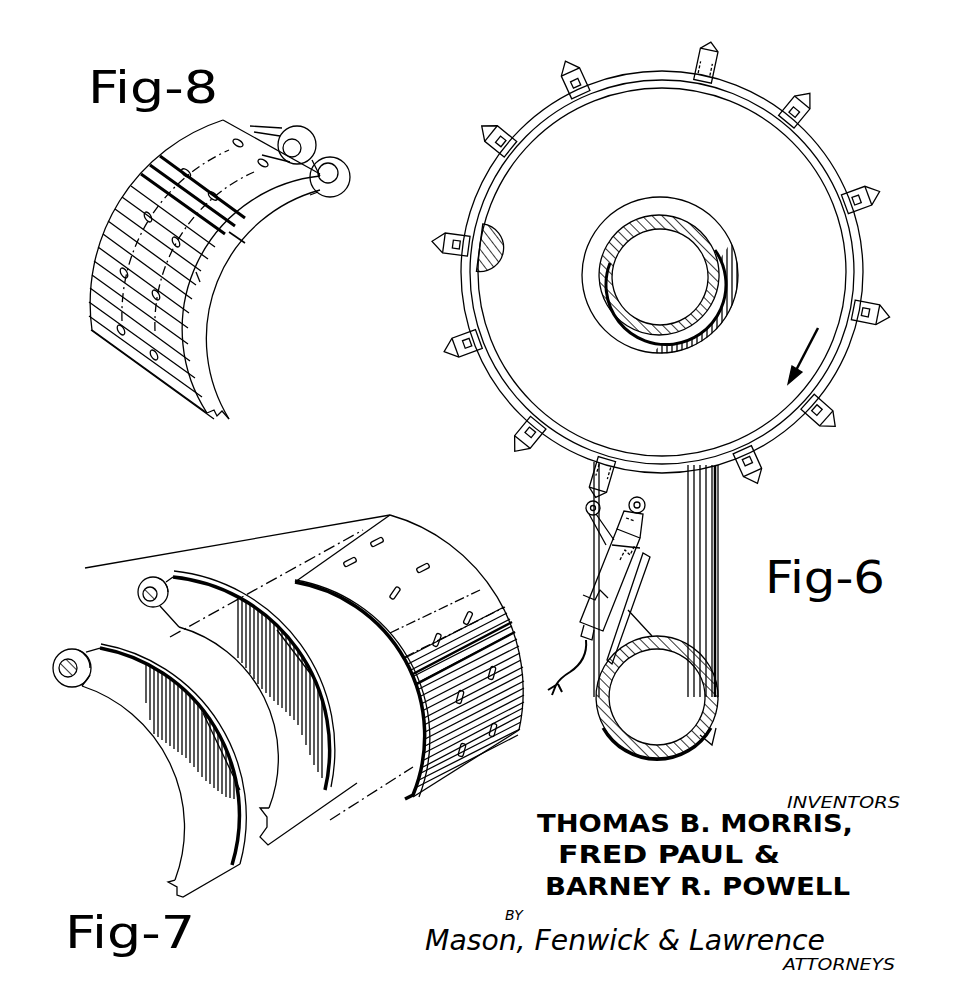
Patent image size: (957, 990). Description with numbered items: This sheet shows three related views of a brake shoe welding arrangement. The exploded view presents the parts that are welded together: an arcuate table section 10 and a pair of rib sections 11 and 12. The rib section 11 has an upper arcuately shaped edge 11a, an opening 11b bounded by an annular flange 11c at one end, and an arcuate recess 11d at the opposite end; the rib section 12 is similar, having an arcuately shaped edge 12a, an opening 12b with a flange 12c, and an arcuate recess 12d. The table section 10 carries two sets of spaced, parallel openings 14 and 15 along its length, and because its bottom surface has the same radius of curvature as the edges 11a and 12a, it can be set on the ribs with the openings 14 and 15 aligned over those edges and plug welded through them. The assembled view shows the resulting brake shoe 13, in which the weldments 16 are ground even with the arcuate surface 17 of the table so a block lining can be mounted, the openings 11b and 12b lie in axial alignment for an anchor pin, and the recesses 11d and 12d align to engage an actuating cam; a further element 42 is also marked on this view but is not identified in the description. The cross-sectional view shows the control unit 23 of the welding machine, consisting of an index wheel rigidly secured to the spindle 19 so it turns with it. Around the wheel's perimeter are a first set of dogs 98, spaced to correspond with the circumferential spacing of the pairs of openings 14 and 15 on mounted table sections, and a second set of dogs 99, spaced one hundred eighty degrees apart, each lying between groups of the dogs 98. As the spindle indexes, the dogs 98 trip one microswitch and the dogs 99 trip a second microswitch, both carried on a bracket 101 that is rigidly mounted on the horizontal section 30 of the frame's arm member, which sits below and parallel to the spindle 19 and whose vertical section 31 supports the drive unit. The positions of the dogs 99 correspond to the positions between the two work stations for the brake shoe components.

In FIG. 7, the table section 10 is at (414, 657).
In FIG. 7, the rib section 11 is at (149, 746).
In FIG. 7, the upper arcuately shaped edge 11a is at (224, 735).
In FIG. 7, the opening 11b is at (70, 688).
In FIG. 7, the annular flange 11c is at (75, 648).
In FIG. 7, the arcuate recess 11d is at (170, 884).
In FIG. 7, the rib section 12 is at (227, 715).
In FIG. 7, the arcuately shaped edge 12a is at (286, 640).
In FIG. 7, the opening 12b is at (152, 608).
In FIG. 7, the flange 12c is at (142, 594).
In FIG. 7, the arcuate recess 12d is at (270, 836).
In FIG. 8, the brake shoe 13 is at (117, 182).
In FIG. 7, the openings 14 is at (393, 596).
In FIG. 7, the openings 15 is at (480, 610).
In FIG. 8, the weldments 16 is at (145, 218).
In FIG. 8, the arcuate surface 17 is at (200, 277).
In FIG. 6, the spindle 19 is at (724, 277).
In FIG. 6, the control unit 23 is at (771, 84).
In FIG. 6, the horizontal section 30 is at (718, 718).
In FIG. 6, the vertical section 31 is at (718, 620).
In FIG. 8, the band edge strip 42 is at (240, 244).
In FIG. 6, the first set of dogs 98 is at (560, 62).
In FIG. 6, the second set of dogs 99 is at (714, 50).
In FIG. 6, the bracket 101 is at (590, 590).